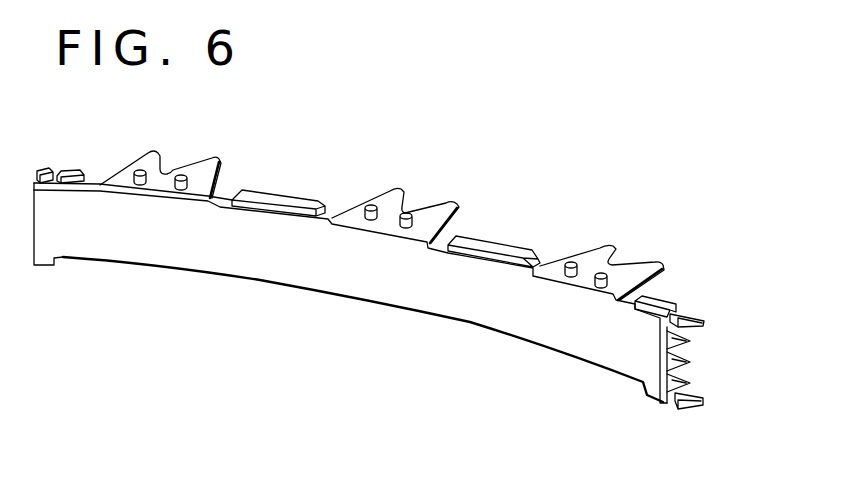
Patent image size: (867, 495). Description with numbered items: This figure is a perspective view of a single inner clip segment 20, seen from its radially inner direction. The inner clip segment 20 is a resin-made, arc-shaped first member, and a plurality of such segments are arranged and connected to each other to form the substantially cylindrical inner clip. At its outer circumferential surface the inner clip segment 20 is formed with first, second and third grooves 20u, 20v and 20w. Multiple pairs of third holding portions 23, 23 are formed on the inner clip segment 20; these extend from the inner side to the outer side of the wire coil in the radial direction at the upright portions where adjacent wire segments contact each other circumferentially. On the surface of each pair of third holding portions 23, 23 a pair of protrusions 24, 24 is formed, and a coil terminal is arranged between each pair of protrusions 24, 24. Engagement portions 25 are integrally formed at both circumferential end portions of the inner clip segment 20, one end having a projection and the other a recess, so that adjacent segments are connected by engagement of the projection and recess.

The inner clip segment 20 is at (340, 316).
The first groove 20u is at (660, 335).
The second groove 20v is at (662, 358).
The third groove 20w is at (662, 385).
The third holding portion 23 is at (393, 189).
The protrusion 24 is at (370, 205).
The engagement portion 25 is at (688, 318).